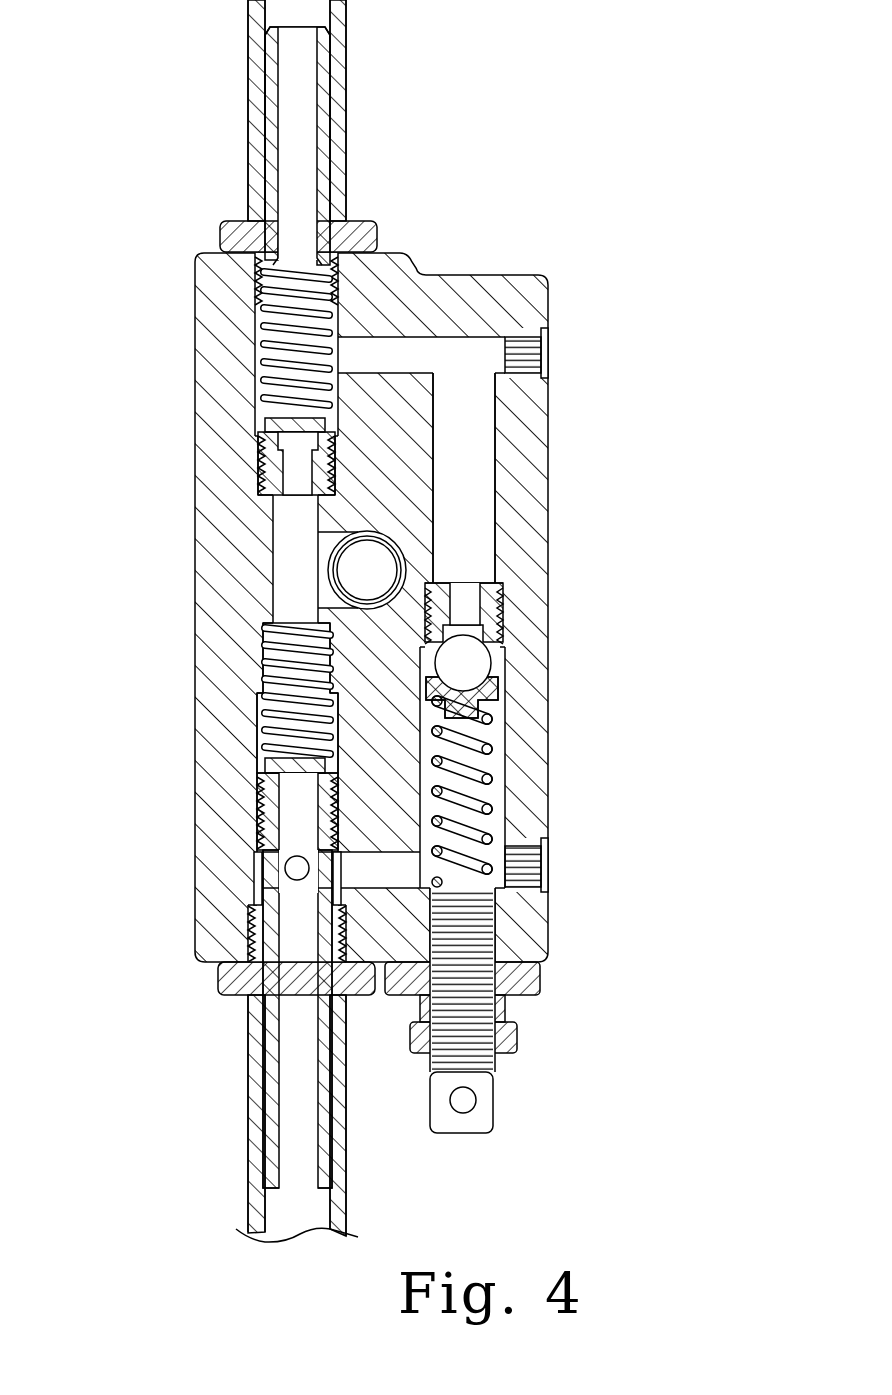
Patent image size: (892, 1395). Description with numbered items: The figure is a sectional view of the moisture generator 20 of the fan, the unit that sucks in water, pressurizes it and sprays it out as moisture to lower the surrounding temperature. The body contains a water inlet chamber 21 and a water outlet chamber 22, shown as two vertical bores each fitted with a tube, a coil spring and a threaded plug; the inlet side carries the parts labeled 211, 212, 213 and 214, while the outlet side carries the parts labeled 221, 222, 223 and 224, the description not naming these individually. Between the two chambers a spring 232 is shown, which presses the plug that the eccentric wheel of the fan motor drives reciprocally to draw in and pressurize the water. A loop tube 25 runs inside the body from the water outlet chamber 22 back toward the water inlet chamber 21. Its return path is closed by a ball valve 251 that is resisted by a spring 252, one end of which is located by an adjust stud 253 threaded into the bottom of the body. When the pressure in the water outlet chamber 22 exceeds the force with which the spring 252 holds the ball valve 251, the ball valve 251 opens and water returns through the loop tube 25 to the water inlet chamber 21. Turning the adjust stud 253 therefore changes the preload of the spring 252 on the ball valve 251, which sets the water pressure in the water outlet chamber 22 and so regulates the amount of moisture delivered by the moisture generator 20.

The moisture generator 20 is at (195, 585).
The water inlet chamber 21 is at (330, 745).
The threaded plug 211 is at (262, 775).
The spring 212 is at (263, 718).
The inner tube 213 is at (262, 1090).
The outer tube 214 is at (346, 1150).
The water outlet chamber 22 is at (263, 340).
The valve seat 221 is at (330, 426).
The threaded plug 222 is at (263, 390).
The inner tube 223 is at (262, 125).
The outer tube 224 is at (346, 125).
The spring 232 is at (367, 531).
The loop tube 25 is at (470, 525).
The ball valve 251 is at (491, 663).
The spring 252 is at (490, 806).
The adjust stud 253 is at (492, 938).